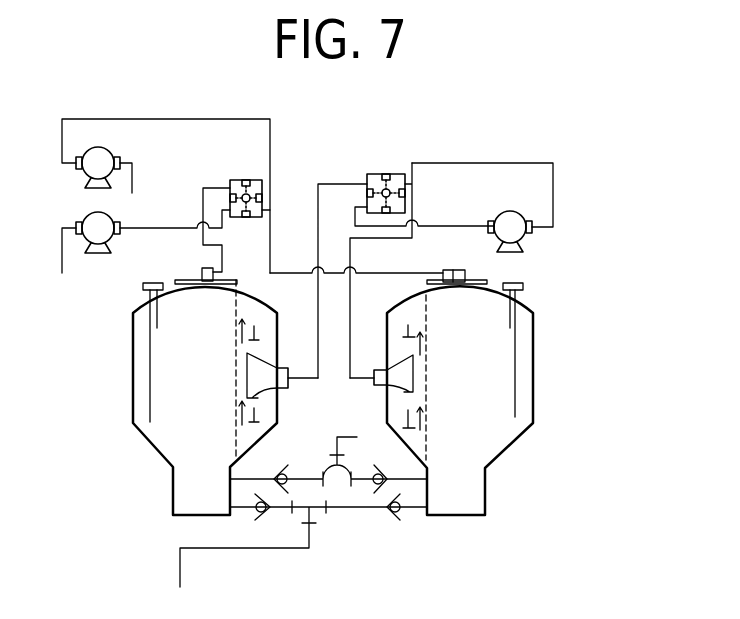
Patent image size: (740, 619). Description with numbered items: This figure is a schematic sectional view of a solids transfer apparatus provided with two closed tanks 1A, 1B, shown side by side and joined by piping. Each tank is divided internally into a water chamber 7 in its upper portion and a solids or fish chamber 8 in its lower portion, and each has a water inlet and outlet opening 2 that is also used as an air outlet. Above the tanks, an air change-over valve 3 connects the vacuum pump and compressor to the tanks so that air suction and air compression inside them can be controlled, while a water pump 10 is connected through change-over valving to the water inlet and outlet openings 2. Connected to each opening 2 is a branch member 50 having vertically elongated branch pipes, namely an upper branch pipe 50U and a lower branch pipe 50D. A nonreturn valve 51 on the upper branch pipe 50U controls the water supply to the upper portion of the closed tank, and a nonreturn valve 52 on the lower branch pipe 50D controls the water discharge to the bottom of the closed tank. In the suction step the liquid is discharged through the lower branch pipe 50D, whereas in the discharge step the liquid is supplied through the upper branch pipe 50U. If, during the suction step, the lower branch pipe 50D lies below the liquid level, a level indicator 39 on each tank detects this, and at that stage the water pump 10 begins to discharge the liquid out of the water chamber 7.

The closed tank 1A is at (132, 356).
The closed tank 1B is at (533, 393).
The water inlet and outlet opening 2 is at (284, 392).
The air change-over valve 3 is at (241, 180).
The water chamber 7 is at (246, 300).
The fish chamber 8 is at (203, 405).
The water pump 10 is at (512, 211).
The level indicator 39 is at (153, 282).
The branch member 50 is at (257, 358).
The upper branch pipe 50U is at (332, 328).
The lower branch pipe 50D is at (337, 440).
The nonreturn valve 51 is at (255, 352).
The nonreturn valve 52 is at (303, 508).